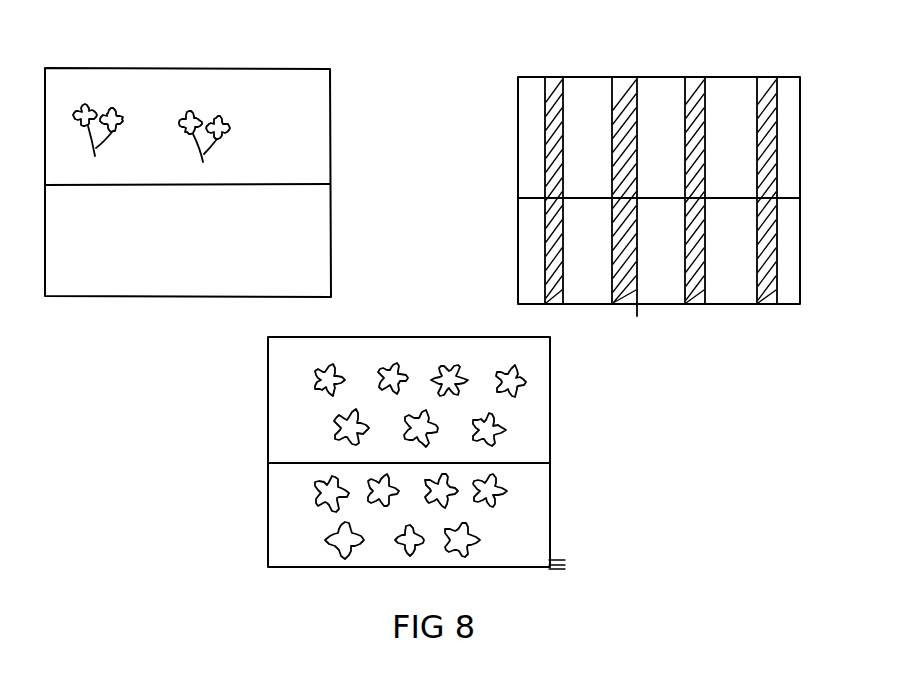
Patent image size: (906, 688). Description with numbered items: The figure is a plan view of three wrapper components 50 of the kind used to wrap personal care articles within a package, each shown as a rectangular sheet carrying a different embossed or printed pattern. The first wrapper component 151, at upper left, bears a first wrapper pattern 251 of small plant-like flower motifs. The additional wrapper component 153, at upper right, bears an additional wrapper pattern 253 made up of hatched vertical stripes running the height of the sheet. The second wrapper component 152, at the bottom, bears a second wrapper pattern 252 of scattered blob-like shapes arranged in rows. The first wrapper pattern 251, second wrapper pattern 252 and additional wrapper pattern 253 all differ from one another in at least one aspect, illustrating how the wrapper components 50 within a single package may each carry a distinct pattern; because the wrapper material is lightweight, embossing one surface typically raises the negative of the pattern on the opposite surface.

The wrapper component 50 is at (461, 291).
The first wrapper component 151 is at (188, 155).
The first wrapper pattern 251 is at (113, 104).
The additional wrapper component 153 is at (698, 165).
The additional wrapper pattern 253 is at (775, 143).
The second wrapper component 152 is at (421, 453).
The second wrapper pattern 252 is at (335, 428).